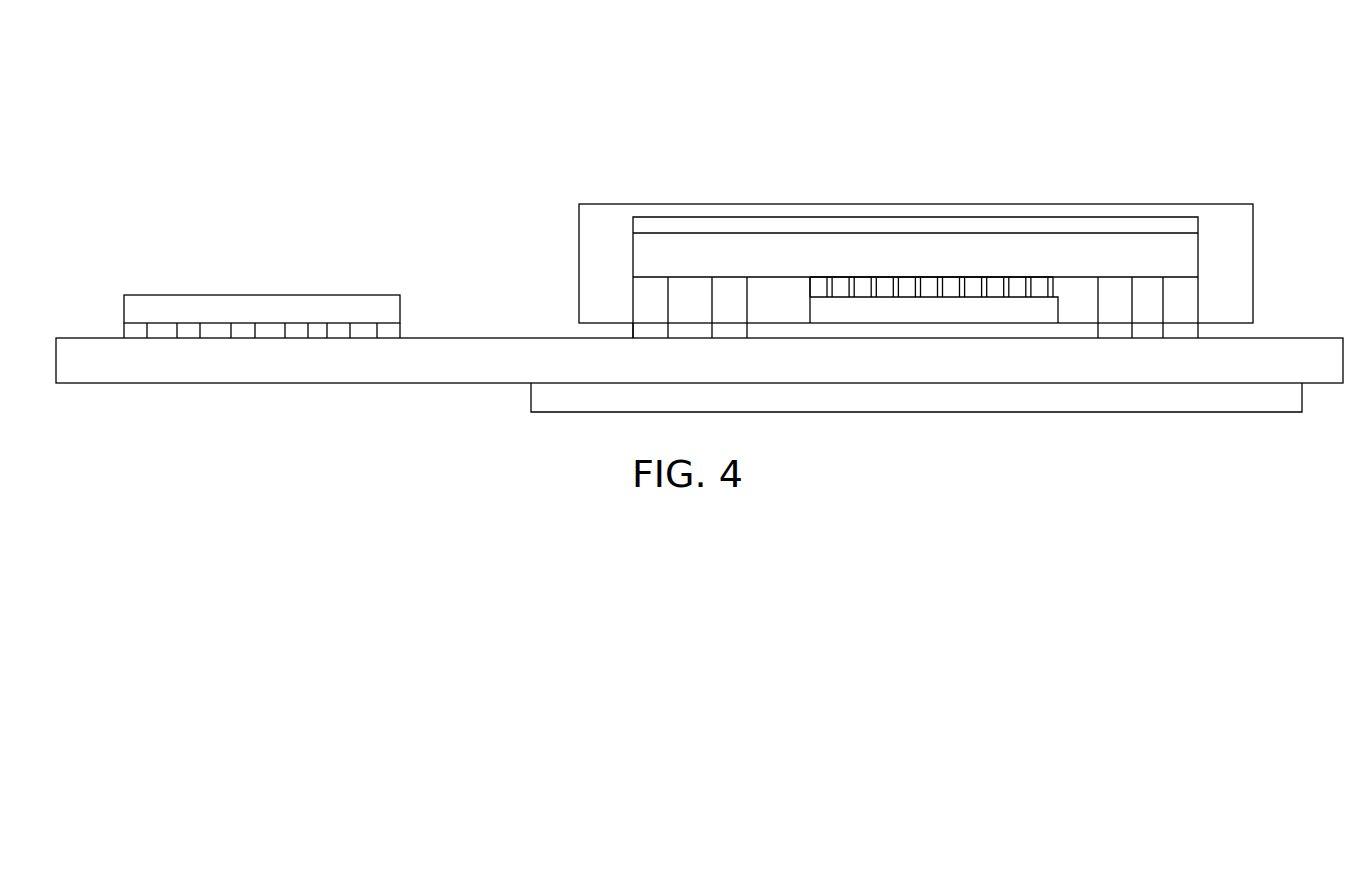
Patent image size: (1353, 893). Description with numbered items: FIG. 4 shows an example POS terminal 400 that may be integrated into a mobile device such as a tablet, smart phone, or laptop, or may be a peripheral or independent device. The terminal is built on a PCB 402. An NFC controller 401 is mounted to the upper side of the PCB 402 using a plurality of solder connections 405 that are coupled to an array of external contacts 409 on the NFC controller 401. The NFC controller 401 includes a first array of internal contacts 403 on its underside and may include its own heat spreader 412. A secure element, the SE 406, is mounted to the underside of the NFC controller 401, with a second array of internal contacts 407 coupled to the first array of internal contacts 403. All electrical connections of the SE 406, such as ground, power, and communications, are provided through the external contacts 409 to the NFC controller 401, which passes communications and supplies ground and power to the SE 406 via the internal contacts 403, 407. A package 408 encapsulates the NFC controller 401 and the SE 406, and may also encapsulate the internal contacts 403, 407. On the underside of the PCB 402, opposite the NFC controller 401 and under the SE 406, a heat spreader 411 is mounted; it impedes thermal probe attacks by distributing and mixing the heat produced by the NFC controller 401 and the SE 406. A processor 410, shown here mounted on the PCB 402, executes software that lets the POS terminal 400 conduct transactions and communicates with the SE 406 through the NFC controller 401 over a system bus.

The POS terminal 400 is at (607, 100).
The NFC controller 401 is at (917, 272).
The PCB 402 is at (488, 366).
The first array of internal contacts 403 is at (1047, 280).
The solder connections 405 is at (648, 340).
The SE 406 is at (936, 318).
The second array of internal contacts 407 is at (1045, 298).
The package 408 is at (1055, 203).
The external contacts 409 is at (748, 283).
The processor 410 is at (400, 296).
The heat spreader 411 is at (872, 413).
The heat spreader 412 is at (1150, 225).